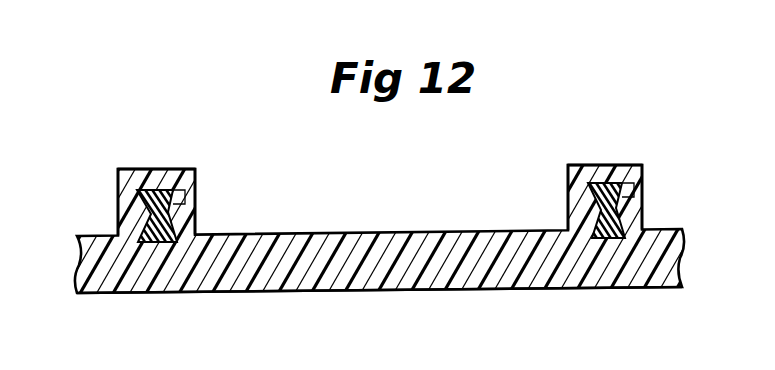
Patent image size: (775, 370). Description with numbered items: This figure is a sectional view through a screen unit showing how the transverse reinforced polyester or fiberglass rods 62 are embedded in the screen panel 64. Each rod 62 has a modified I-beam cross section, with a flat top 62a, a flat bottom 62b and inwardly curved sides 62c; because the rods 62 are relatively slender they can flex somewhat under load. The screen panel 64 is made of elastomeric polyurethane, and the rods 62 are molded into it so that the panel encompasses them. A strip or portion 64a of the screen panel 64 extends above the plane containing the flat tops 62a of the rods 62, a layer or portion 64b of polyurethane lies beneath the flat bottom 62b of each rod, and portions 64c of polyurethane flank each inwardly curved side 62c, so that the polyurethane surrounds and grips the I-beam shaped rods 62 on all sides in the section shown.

The transverse reinforced rod 62 is at (196, 196).
The flat top 62a is at (148, 189).
The flat bottom 62b is at (150, 246).
The inwardly curved side 62c is at (150, 216).
The screen panel 64 is at (420, 295).
The screen panel strip portion 64a is at (171, 188).
The polyurethane layer portion 64b is at (170, 257).
The polyurethane flanking portions 64c is at (178, 203).